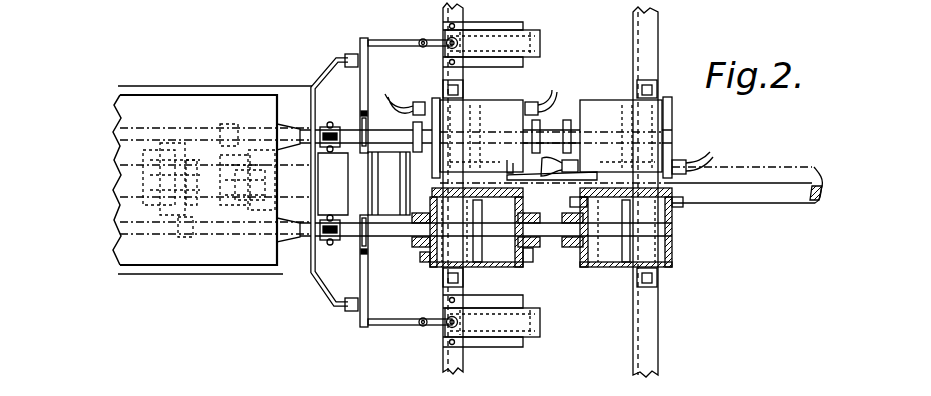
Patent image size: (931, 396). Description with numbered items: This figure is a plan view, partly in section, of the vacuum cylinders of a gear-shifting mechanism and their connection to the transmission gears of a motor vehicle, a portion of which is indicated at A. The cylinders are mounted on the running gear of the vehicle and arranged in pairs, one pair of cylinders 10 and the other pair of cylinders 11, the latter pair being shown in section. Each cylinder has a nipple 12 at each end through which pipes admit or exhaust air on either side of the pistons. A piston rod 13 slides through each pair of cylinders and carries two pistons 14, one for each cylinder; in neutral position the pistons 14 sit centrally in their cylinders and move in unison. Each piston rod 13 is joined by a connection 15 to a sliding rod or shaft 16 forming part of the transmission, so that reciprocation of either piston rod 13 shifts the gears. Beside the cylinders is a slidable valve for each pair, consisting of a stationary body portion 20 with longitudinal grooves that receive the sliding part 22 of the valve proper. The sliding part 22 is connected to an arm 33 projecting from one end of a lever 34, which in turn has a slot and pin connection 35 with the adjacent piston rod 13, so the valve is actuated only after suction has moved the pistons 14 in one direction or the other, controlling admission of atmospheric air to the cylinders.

The portion of the motor operated vehicle A is at (192, 97).
The pair of cylinders 10 is at (513, 103).
The pair of cylinders 11 is at (523, 264).
The nipple 12 is at (421, 100).
The piston rod 13 is at (381, 133).
The piston 14 is at (485, 268).
The connection 15 is at (333, 240).
The sliding rod or shaft 16 is at (309, 136).
The stationary body portion 20 is at (532, 37).
The sliding or movable part 22 is at (533, 46).
The arm 33 is at (400, 35).
The lever 34 is at (336, 60).
The slot and pin connection 35 is at (361, 127).